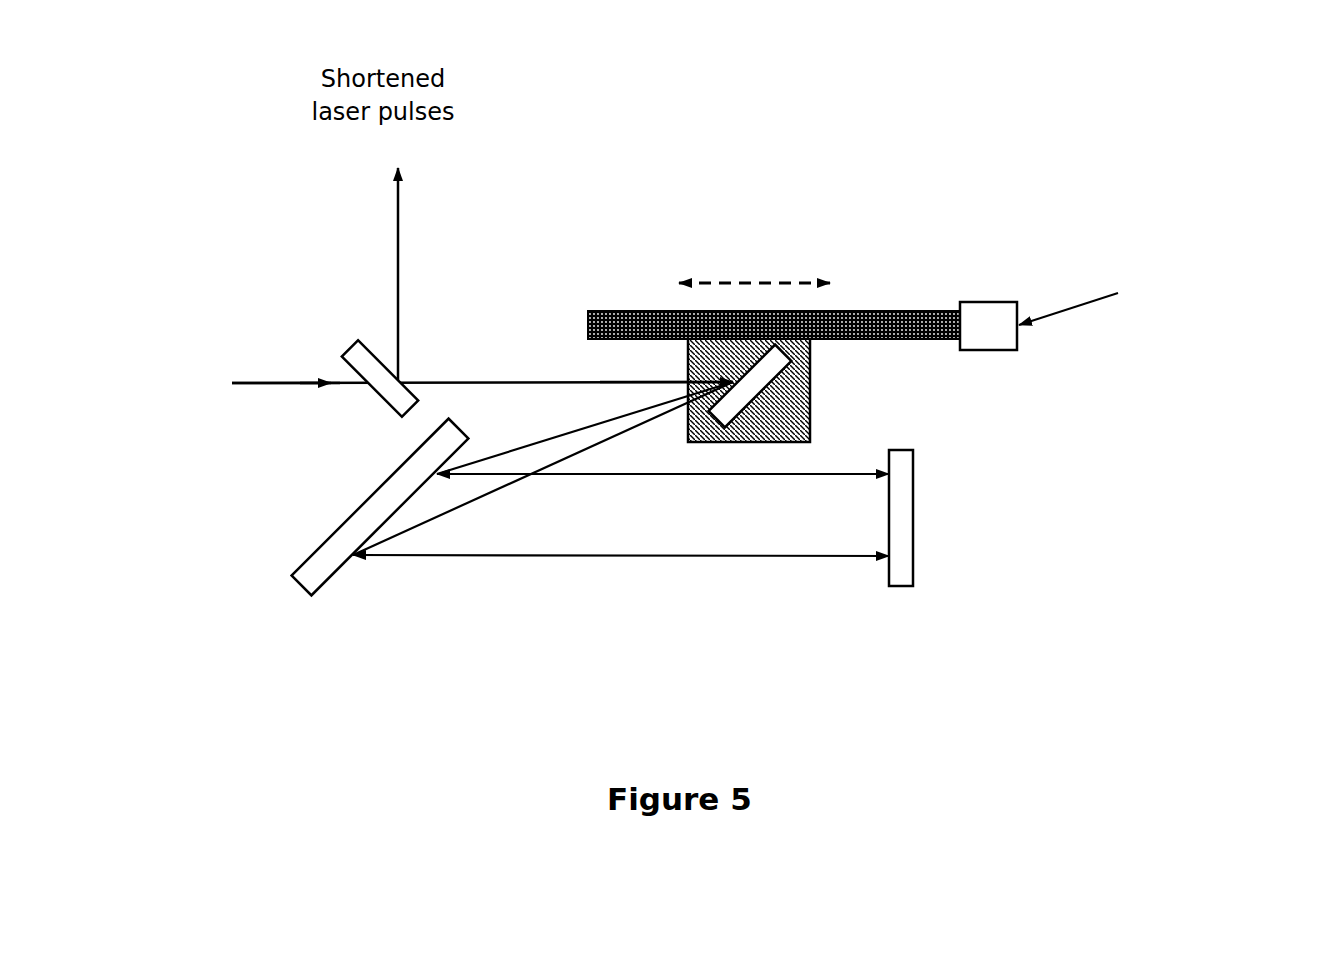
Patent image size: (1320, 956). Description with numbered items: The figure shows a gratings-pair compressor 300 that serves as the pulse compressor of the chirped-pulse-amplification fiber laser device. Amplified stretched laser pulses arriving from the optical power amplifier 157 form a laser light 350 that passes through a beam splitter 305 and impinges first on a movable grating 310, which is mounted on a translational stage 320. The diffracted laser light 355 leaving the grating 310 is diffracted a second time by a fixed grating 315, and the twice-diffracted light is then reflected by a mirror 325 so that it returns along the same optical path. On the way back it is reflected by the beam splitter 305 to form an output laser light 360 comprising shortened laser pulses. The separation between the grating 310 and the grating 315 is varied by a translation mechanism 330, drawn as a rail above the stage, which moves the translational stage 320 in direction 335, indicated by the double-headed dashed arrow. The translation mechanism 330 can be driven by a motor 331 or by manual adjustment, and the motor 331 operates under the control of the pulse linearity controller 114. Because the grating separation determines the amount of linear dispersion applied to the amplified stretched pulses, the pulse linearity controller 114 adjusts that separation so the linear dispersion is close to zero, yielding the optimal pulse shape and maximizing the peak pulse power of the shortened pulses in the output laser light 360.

The gratings-pair compressor 300 is at (942, 146).
The beam splitter 305 is at (360, 362).
The grating 310 is at (743, 390).
The grating 315 is at (327, 560).
The translational stage 320 is at (790, 378).
The mirror 325 is at (905, 534).
The translation mechanism 330 is at (888, 311).
The motor 331 is at (1002, 313).
The direction 335 is at (750, 285).
The laser light 350 is at (280, 383).
The diffracted laser light 355 is at (423, 520).
The output laser light 360 is at (398, 197).
The pulse linearity controller 114 is at (1157, 280).
The optical power amplifier 157 is at (425, 375).